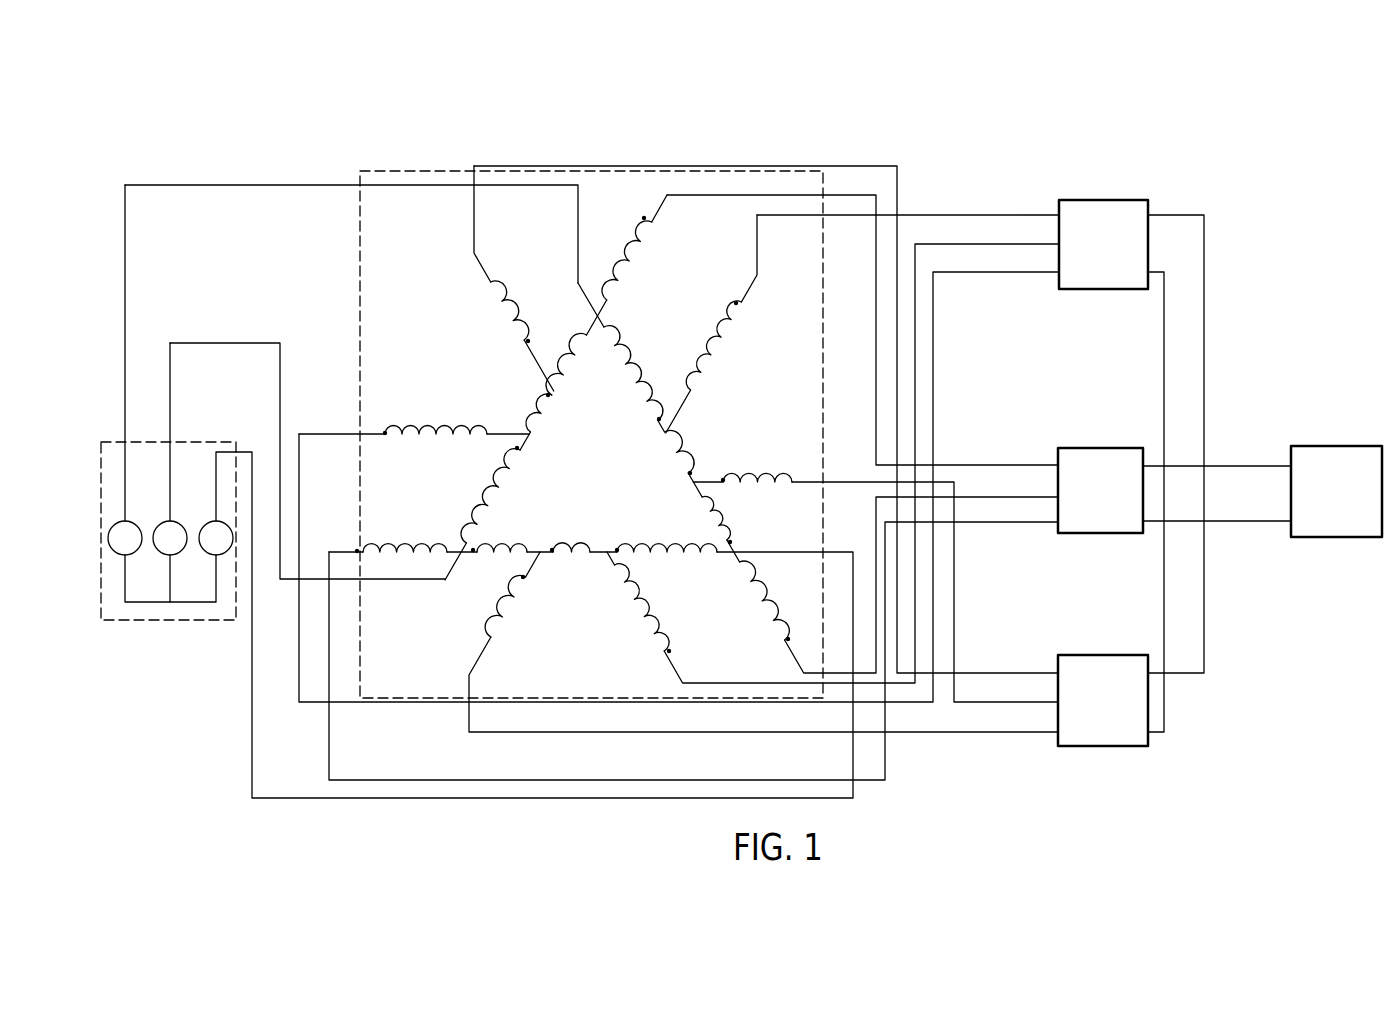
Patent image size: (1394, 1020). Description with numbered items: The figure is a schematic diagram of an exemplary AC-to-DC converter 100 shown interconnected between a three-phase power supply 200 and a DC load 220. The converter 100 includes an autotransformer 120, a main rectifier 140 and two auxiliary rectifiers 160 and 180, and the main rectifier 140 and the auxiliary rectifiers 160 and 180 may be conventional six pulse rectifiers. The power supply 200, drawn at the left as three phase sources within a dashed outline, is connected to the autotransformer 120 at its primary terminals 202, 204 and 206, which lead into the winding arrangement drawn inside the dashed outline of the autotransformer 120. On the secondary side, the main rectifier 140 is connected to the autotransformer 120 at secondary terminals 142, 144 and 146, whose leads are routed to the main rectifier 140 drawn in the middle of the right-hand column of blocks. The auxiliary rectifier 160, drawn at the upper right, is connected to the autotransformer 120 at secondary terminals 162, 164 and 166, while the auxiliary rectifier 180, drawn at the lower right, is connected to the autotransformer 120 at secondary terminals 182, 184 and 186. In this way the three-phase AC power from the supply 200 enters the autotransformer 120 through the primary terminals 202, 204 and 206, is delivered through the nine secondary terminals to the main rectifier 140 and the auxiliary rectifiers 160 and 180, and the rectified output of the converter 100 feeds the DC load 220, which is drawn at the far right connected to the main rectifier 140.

The AC-to-DC converter 100 is at (185, 147).
The autotransformer 120 is at (395, 170).
The main rectifier 140 is at (1115, 448).
The secondary terminal 142 is at (669, 197).
The secondary terminal 144 is at (802, 675).
The secondary terminal 146 is at (356, 549).
The auxiliary rectifier 160 is at (1122, 200).
The secondary terminal 162 is at (758, 276).
The secondary terminal 164 is at (685, 680).
The secondary terminal 166 is at (385, 430).
The auxiliary rectifier 180 is at (1122, 655).
The secondary terminal 182 is at (479, 270).
The secondary terminal 184 is at (810, 482).
The secondary terminal 186 is at (482, 677).
The 3-phase power supply 200 is at (203, 621).
The primary terminal 202 is at (578, 283).
The primary terminal 204 is at (447, 585).
The primary terminal 206 is at (765, 550).
The DC load 220 is at (1352, 446).